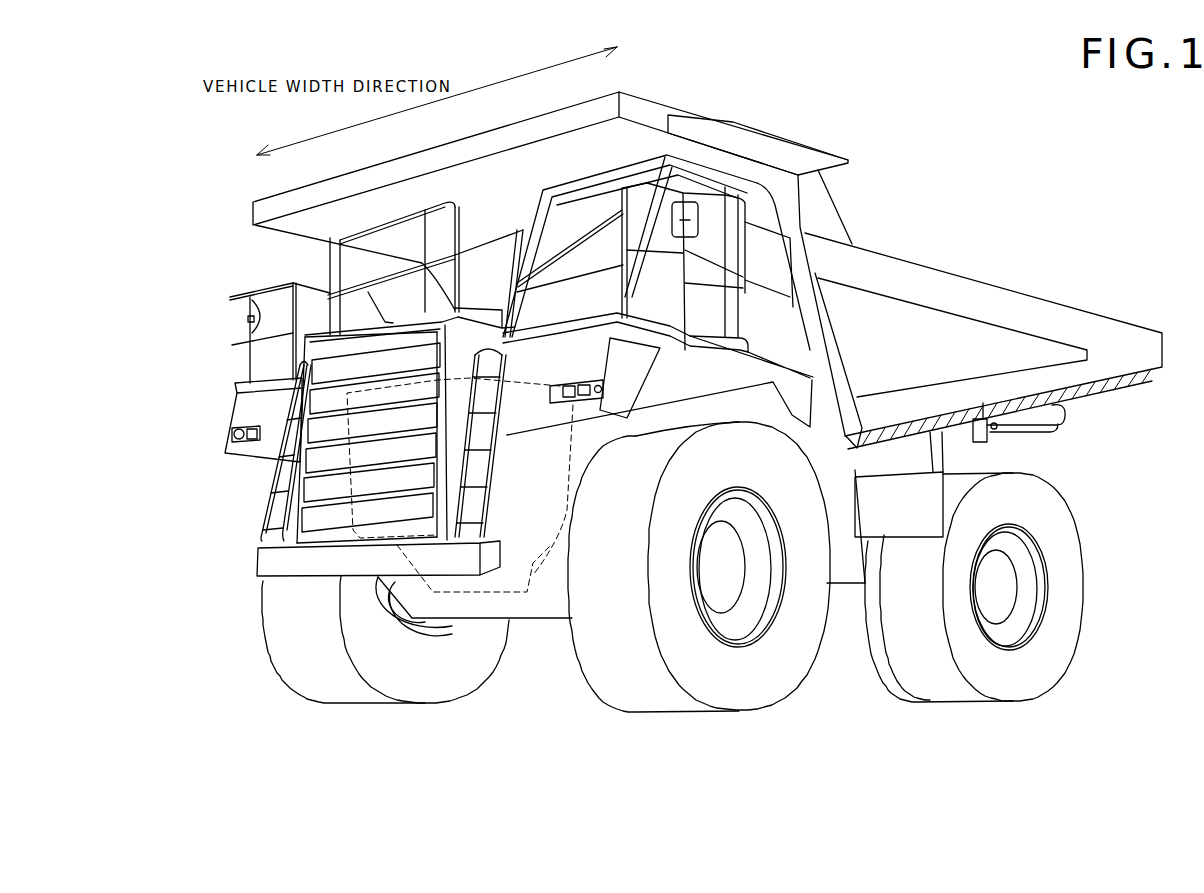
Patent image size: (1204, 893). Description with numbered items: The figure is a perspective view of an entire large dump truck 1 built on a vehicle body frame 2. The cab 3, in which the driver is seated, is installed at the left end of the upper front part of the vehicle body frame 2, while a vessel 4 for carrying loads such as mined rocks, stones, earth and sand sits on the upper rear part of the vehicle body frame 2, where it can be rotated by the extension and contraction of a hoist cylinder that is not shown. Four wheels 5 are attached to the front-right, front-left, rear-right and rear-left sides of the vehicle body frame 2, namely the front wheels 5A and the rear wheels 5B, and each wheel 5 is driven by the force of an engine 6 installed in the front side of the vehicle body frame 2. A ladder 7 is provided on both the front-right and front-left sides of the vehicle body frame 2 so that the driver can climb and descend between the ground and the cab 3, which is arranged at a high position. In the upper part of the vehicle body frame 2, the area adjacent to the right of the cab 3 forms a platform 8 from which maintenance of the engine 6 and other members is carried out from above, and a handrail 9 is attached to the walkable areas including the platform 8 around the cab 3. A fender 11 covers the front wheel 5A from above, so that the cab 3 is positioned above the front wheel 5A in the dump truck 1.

The dump truck 1 is at (814, 86).
The vehicle body frame 2 is at (513, 617).
The cab 3 is at (575, 192).
The vessel 4 is at (1021, 302).
The wheel 5 is at (443, 682).
The front wheel 5A is at (755, 682).
The rear wheel 5B is at (955, 682).
The engine 6 is at (530, 576).
The ladder 7 is at (264, 481).
The platform 8 is at (476, 302).
The handrail 9 is at (397, 212).
The fender 11 is at (822, 401).